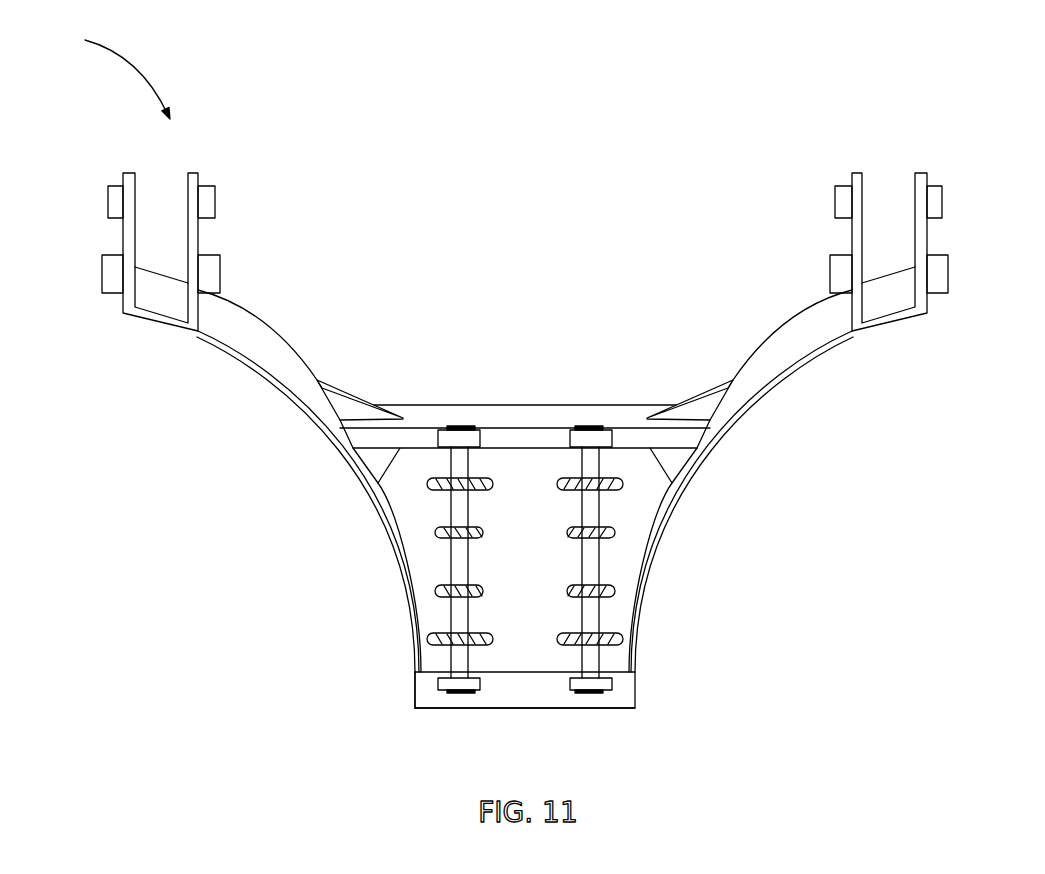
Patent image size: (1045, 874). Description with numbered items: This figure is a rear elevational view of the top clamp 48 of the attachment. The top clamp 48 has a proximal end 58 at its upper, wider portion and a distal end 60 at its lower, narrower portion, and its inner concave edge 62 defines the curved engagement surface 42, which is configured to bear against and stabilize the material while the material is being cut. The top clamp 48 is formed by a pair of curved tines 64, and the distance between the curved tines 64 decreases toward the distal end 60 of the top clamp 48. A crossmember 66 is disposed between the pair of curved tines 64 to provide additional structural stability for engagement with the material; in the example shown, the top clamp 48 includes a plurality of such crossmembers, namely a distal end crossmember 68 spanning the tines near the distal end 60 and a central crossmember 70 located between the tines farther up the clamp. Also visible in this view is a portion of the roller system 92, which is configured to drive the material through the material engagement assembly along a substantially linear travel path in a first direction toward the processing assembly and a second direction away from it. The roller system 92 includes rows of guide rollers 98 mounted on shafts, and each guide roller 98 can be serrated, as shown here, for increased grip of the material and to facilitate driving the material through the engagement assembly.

The top clamp 48 is at (106, 68).
The proximal end 58 is at (120, 235).
The curved engagement surface 42 is at (247, 368).
The inner concave edge 62 is at (383, 525).
The curved tines 64 is at (288, 377).
The central crossmember 70 is at (635, 438).
The guide rollers 98 is at (437, 475).
The roller system 92 is at (493, 457).
The crossmember 66 is at (597, 702).
The distal end 60 is at (427, 700).
The distal end crossmember 68 is at (518, 695).